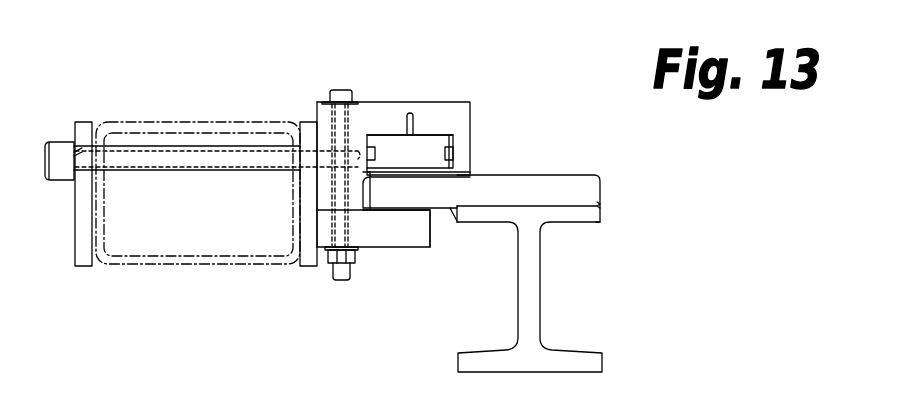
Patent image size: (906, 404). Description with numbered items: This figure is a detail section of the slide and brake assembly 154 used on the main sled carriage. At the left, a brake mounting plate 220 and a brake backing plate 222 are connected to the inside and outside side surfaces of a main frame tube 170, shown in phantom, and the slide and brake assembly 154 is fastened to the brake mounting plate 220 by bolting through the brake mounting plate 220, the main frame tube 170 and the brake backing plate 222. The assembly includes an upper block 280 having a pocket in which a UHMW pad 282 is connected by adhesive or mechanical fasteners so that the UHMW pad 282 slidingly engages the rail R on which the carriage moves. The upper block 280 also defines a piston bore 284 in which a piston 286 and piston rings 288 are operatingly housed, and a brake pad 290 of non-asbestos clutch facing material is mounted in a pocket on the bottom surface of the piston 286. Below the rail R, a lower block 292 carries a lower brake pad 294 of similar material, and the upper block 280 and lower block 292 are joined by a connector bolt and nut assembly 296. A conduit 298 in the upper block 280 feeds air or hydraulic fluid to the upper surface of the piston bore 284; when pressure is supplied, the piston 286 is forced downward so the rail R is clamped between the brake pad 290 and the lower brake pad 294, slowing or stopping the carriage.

The slide and brake assembly 154 is at (424, 62).
The main frame tube 170 is at (178, 121).
The brake mounting plate 220 is at (308, 121).
The brake backing plate 222 is at (86, 121).
The upper block 280 is at (440, 101).
The UHMW pad 282 is at (472, 176).
The piston bore 284 is at (452, 143).
The piston 286 is at (436, 134).
The piston ring 288 is at (454, 153).
The brake pad 290 is at (462, 171).
The lower block 292 is at (375, 233).
The lower brake pad 294 is at (405, 211).
The connector bolt and nut assembly 296 is at (332, 270).
The conduit 298 is at (408, 113).
The rail R is at (577, 175).